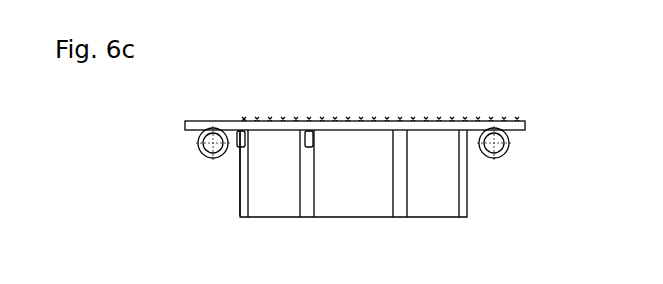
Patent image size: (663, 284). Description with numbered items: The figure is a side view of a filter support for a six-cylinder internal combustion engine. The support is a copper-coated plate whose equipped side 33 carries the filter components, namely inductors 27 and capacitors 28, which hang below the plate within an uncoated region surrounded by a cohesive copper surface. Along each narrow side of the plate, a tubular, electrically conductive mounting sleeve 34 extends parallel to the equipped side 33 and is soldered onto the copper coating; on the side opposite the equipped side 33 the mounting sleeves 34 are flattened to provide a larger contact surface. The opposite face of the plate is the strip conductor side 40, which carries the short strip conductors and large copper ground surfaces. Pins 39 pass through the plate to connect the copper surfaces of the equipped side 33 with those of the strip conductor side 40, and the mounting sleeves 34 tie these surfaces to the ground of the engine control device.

The inductors 27 is at (440, 193).
The capacitors 28 is at (312, 131).
The equipped side 33 is at (266, 139).
The mounting sleeves 34 is at (202, 153).
The pins 39 is at (187, 122).
The strip conductor side 40 is at (379, 114).